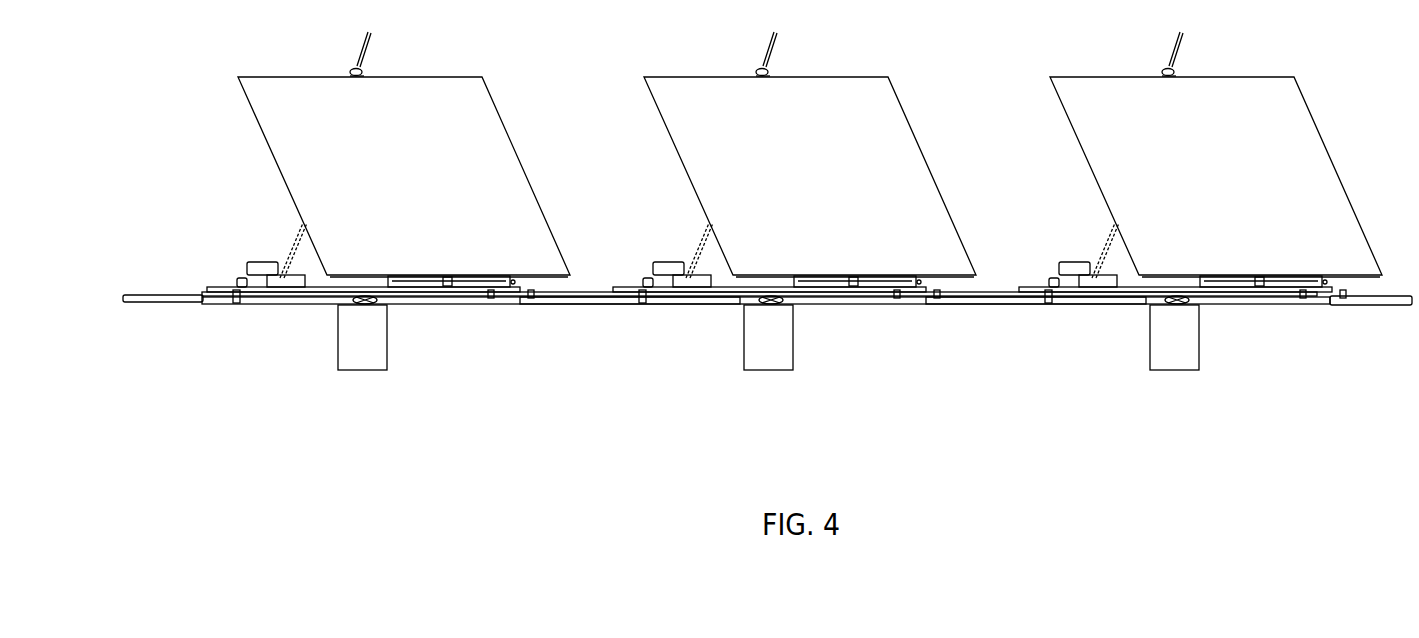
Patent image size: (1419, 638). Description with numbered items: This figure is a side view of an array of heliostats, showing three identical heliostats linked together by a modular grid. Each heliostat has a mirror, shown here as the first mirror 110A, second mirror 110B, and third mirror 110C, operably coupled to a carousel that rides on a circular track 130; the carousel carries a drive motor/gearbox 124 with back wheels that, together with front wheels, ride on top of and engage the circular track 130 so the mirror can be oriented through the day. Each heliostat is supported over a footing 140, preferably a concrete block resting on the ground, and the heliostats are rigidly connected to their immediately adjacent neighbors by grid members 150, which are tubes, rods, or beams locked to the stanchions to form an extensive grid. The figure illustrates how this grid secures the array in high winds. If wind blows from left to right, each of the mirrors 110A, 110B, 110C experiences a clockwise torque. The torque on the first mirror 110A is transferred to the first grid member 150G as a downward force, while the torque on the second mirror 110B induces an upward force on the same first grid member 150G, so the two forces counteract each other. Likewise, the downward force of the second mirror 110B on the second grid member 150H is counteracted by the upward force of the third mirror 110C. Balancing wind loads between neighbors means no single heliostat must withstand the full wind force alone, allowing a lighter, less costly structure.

The first mirror 110A is at (428, 172).
The second mirror 110B is at (810, 154).
The third mirror 110C is at (1216, 154).
The drive motor/gearbox 124 is at (253, 262).
The circular track 130 is at (222, 286).
The footing 140 is at (365, 347).
The grid members 150 is at (193, 307).
The first grid member 150G is at (602, 300).
The second grid member 150H is at (978, 297).